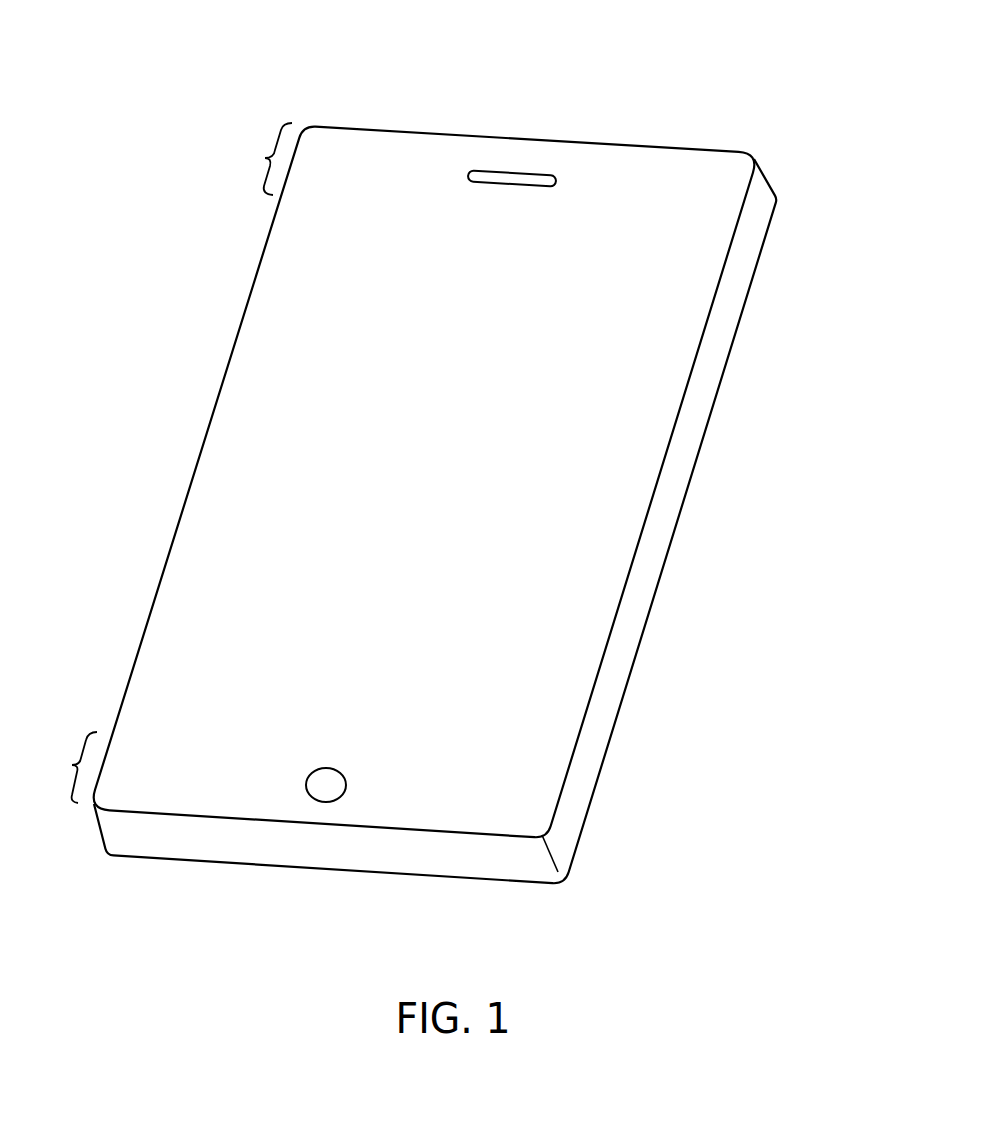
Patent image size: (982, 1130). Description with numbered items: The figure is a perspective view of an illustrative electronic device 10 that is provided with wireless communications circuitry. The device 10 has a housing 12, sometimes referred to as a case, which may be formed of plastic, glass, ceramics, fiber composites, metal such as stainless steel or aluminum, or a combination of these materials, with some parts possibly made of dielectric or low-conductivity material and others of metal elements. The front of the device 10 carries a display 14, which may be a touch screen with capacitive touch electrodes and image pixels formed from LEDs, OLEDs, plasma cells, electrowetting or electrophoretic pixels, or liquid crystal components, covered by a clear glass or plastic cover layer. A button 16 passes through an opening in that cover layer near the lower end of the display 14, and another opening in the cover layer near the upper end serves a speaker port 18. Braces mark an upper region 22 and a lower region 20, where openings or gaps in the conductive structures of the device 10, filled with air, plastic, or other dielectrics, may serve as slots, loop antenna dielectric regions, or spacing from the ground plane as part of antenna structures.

The electronic device 10 is at (454, 475).
The housing 12 is at (752, 282).
The display 14 is at (263, 467).
The button 16 is at (326, 802).
The speaker port 18 is at (505, 172).
The region 20 is at (67, 767).
The region 22 is at (262, 159).